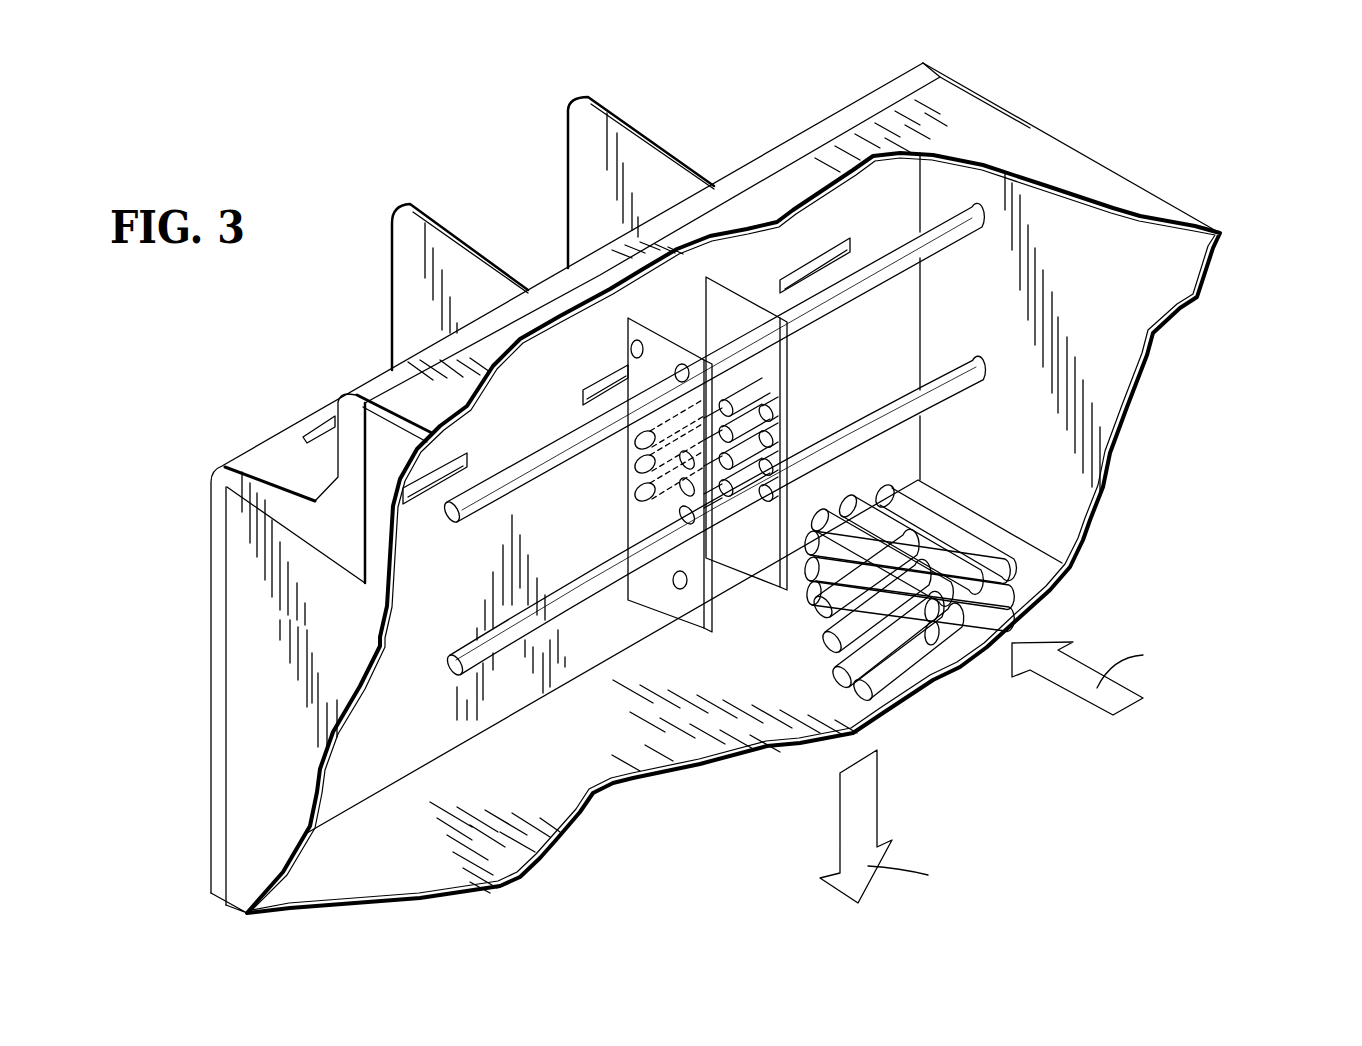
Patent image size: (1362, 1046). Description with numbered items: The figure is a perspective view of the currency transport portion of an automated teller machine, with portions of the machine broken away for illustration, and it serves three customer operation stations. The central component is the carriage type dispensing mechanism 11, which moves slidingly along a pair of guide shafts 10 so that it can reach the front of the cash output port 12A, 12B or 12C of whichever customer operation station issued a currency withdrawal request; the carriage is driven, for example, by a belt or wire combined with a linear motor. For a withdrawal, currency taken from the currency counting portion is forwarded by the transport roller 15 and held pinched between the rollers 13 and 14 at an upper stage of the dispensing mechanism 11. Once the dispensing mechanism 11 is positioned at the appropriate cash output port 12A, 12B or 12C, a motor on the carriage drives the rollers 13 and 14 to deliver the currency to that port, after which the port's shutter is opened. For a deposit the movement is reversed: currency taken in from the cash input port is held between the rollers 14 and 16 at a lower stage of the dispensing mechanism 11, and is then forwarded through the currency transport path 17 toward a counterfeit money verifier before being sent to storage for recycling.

The guide shafts 10 is at (467, 528).
The dispensing mechanism 11 is at (653, 303).
The cash output port 12A is at (465, 457).
The cash output port 12B is at (598, 382).
The cash output port 12C is at (835, 243).
The roller 13 is at (708, 444).
The roller 14 is at (680, 491).
The transport roller 15 is at (950, 527).
The roller 16 is at (682, 518).
The currency transport path 17 is at (822, 643).